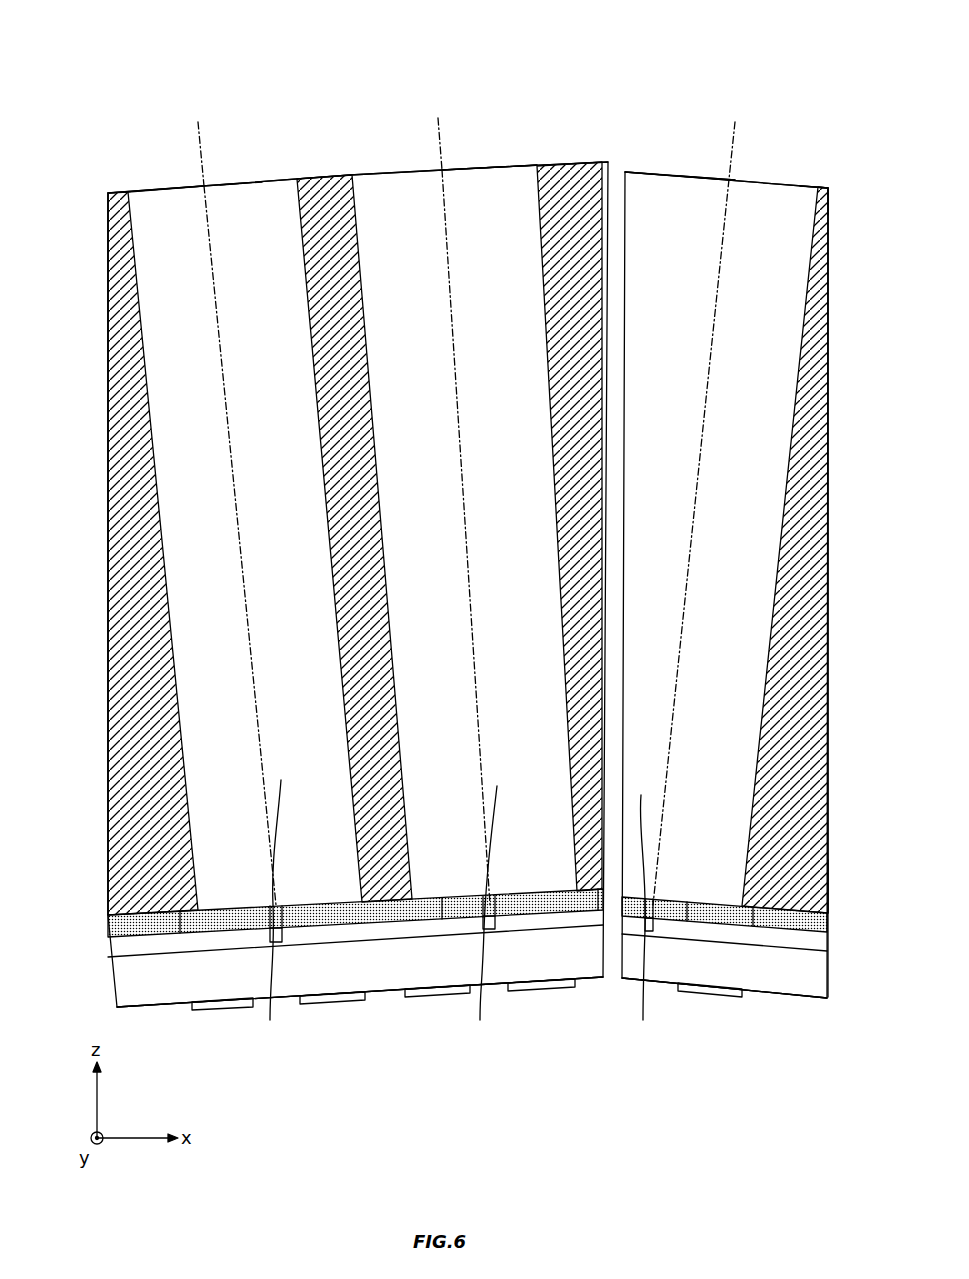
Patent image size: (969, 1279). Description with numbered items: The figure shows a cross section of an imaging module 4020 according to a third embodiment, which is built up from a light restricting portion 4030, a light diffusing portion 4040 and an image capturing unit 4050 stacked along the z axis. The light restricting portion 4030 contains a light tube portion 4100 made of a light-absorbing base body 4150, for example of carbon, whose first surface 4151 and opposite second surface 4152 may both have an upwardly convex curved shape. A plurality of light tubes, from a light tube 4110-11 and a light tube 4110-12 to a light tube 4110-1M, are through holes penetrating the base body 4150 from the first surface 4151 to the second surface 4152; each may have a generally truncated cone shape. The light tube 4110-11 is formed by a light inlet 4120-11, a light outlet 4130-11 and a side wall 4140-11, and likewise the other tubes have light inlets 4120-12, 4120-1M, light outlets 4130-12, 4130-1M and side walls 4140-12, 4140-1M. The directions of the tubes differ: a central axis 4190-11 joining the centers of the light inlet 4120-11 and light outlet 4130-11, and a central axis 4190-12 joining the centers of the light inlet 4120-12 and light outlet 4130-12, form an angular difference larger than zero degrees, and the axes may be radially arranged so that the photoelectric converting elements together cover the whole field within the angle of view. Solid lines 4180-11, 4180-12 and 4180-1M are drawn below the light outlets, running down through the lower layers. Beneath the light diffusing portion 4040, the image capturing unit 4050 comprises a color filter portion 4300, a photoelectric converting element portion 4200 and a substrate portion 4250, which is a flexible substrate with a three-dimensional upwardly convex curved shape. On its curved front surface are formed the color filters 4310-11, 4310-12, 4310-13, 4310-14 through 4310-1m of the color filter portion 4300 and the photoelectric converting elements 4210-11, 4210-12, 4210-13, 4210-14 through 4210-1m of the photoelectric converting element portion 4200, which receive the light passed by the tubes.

The imaging module 4020 is at (491, 23).
The light tube portion 4100 is at (798, 108).
The light restricting portion 4030 is at (97, 197).
The light diffusing portion 4040 is at (97, 922).
The image capturing unit 4050 is at (97, 943).
The light tube 4110-11 is at (243, 174).
The light tube 4110-12 is at (509, 158).
The light tube 4110-1M is at (702, 168).
The light inlet 4120-11 is at (162, 190).
The light inlet 4120-12 is at (480, 165).
The light inlet 4120-1M is at (678, 177).
The light outlet 4130-11 is at (273, 545).
The light outlet 4130-12 is at (503, 537).
The light outlet 4130-1M is at (678, 513).
The side wall 4140-11 is at (131, 314).
The side wall 4140-12 is at (350, 298).
The side wall 4140-1M is at (803, 326).
The base body 4150 is at (830, 470).
The first surface 4151 is at (829, 187).
The second surface 4152 is at (821, 884).
The first via conductor 4180-11 is at (276, 913).
The second via conductor 4180-12 is at (487, 915).
The M-th via conductor 4180-1M is at (654, 919).
The central axis 4190-11 is at (197, 134).
The central axis 4190-12 is at (438, 142).
The photoelectric converting element portion 4200 is at (727, 1080).
The photoelectric converting element 4210-11 is at (218, 1010).
The photoelectric converting element 4210-12 is at (330, 1002).
The photoelectric converting element 4210-13 is at (438, 996).
The photoelectric converting element 4210-14 is at (543, 990).
The photoelectric converting element 4210-1m is at (705, 997).
The substrate portion 4250 is at (779, 1004).
The color filter portion 4300 is at (828, 936).
The color filter 4310-11 is at (215, 922).
The color filter 4310-12 is at (318, 927).
The color filter 4310-13 is at (441, 898).
The color filter 4310-14 is at (531, 912).
The color filter 4310-1m is at (689, 905).